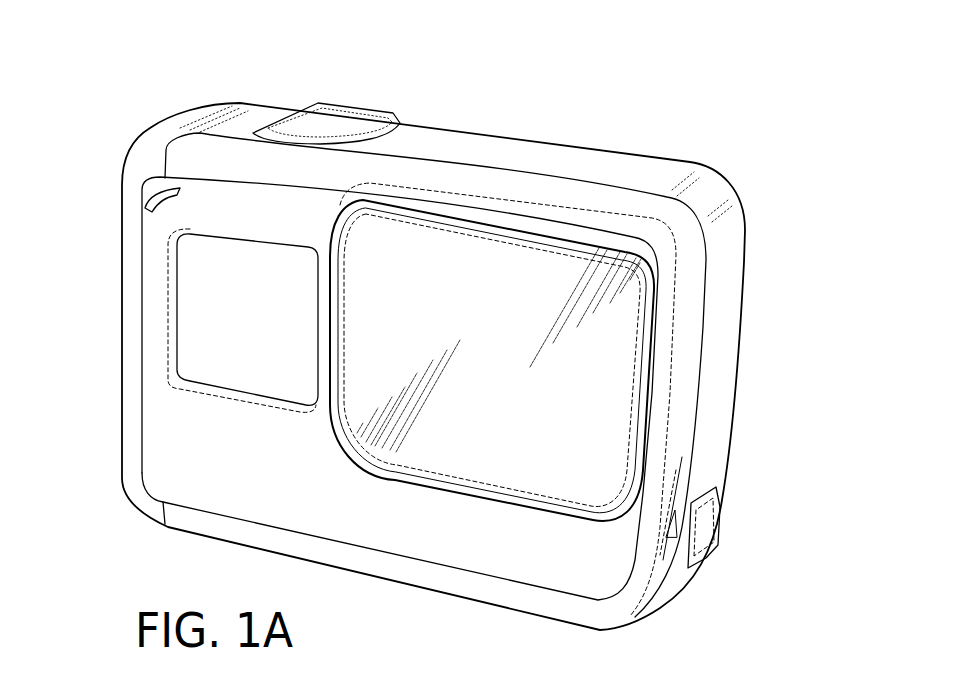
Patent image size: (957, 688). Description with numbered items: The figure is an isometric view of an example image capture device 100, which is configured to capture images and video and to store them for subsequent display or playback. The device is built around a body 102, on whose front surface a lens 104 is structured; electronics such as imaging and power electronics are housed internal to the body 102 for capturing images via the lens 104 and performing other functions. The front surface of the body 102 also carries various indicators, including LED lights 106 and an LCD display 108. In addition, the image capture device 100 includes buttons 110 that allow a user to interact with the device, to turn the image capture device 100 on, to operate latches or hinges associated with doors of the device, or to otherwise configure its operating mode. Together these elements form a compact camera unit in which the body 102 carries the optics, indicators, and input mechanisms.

The image capture device 100 is at (773, 158).
The body 102 is at (686, 158).
The lens 104 is at (606, 388).
The LED lights 106 is at (150, 192).
The LCD display 108 is at (207, 350).
The buttons 110 is at (318, 102).